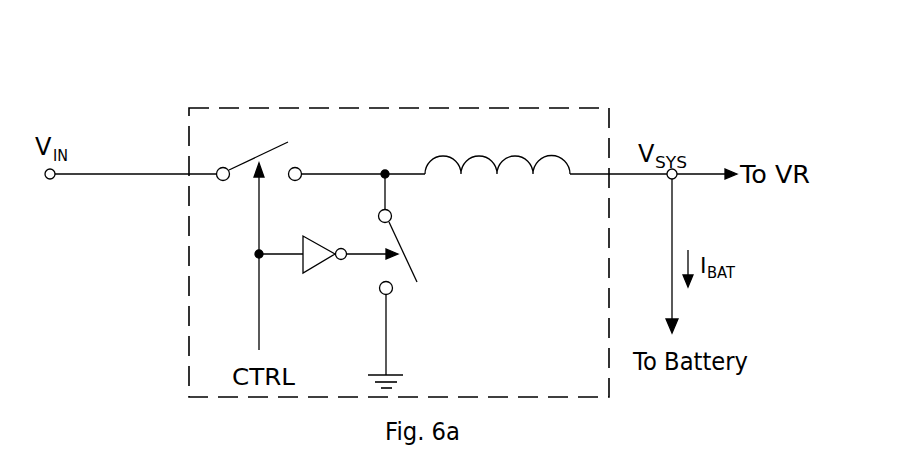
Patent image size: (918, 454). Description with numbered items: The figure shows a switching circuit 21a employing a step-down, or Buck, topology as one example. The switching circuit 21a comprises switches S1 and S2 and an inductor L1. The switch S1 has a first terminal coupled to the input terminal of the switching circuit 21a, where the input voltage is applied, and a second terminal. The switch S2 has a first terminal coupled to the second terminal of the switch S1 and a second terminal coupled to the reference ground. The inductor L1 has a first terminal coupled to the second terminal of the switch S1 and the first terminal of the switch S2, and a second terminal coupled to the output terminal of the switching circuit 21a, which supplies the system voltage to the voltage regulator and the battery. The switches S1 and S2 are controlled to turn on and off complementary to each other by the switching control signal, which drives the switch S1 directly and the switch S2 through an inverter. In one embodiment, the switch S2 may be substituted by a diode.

The switching circuit 21a is at (542, 103).
The switch S1 is at (259, 147).
The switch S2 is at (415, 236).
The inductor L1 is at (497, 147).